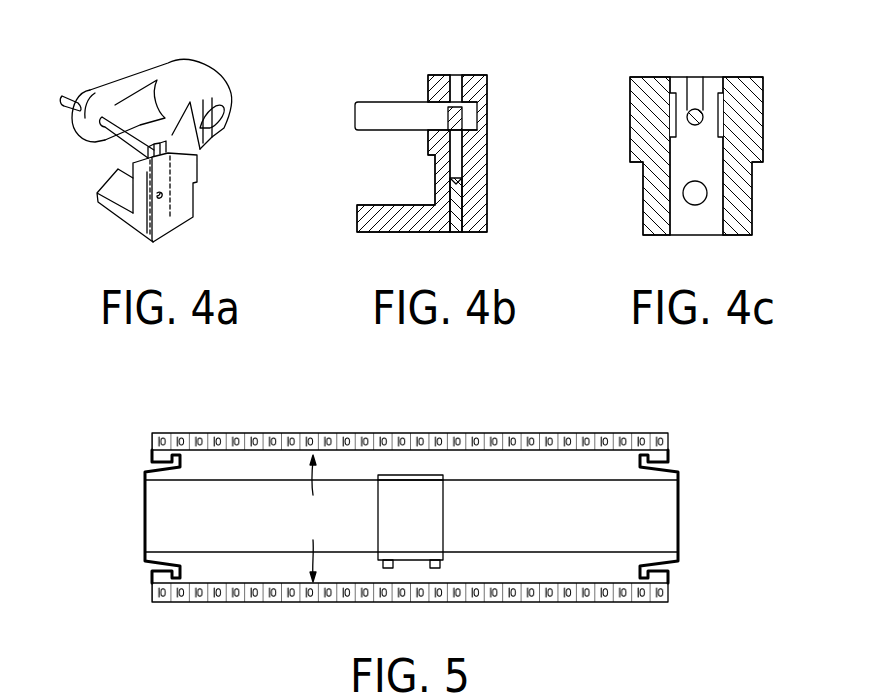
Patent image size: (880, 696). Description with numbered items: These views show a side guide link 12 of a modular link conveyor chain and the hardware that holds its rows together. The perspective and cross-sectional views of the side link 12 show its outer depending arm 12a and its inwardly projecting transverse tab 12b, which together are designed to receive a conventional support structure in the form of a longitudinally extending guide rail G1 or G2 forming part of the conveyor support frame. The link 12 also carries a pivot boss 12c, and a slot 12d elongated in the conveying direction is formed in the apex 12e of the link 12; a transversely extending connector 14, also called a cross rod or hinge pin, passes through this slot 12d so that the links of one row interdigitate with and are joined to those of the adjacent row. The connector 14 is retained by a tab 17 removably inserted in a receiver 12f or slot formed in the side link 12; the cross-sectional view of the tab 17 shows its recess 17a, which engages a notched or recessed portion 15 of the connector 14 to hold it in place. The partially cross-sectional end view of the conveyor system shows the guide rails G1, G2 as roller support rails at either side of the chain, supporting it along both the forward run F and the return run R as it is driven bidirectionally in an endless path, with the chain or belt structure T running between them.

In FIG. 4b, the side guide link 12 is at (420, 131).
In FIG. 4a, the outer depending arm 12a is at (180, 220).
In FIG. 4b, the outer depending arm 12a is at (482, 210).
In FIG. 4a, the transverse tab 12b is at (118, 186).
In FIG. 4b, the transverse tab 12b is at (365, 218).
In FIG. 4a, the pivot boss 12c is at (92, 100).
In FIG. 4a, the slot 12d is at (222, 107).
In FIG. 4a, the apex 12e is at (232, 113).
In FIG. 4b, the receiver 12f is at (453, 88).
In FIG. 4a, the transversely extending connector 14 is at (62, 97).
In FIG. 4b, the transversely extending connector 14 is at (382, 132).
In FIG. 4c, the transversely extending connector 14 is at (697, 107).
In FIG. 4b, the notched or recessed portion 15 is at (467, 90).
In FIG. 4c, the tab 17 is at (705, 227).
In FIG. 4c, the recess 17a is at (702, 115).
In FIG. 5, the tube T is at (530, 515).
In FIG. 5, the forward run F is at (322, 475).
In FIG. 5, the return run R is at (304, 550).
In FIG. 5, the guide rail G1 is at (145, 528).
In FIG. 5, the guide rail G2 is at (680, 557).